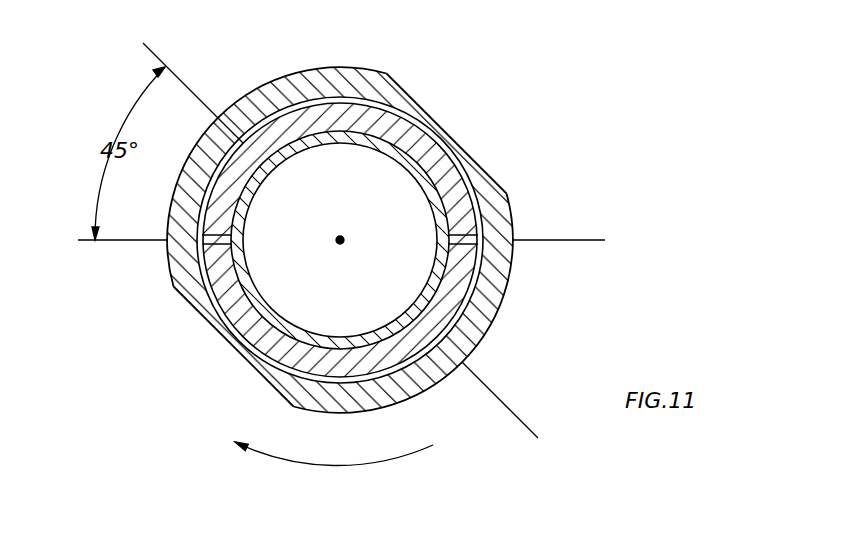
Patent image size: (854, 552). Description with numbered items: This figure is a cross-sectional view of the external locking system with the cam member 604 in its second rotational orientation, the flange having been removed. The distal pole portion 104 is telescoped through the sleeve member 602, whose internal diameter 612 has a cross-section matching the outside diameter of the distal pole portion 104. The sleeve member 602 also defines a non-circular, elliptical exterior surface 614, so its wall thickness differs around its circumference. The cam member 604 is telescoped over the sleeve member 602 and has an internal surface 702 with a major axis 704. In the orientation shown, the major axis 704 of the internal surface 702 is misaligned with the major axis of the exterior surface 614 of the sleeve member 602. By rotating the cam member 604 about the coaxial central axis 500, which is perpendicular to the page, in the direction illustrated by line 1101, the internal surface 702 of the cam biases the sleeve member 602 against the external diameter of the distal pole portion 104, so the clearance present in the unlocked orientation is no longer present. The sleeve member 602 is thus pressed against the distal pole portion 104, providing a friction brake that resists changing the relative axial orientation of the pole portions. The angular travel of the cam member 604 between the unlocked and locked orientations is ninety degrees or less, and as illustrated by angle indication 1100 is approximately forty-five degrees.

The distal pole portion 104 is at (420, 127).
The central axis 500 is at (339, 235).
The sleeve member 602 is at (480, 208).
The cam member 604 is at (470, 157).
The internal diameter 612 is at (485, 186).
The exterior surface 614 is at (330, 103).
The internal surface 702 is at (264, 116).
The major axis 704 is at (186, 86).
The rotation angle 1100 is at (122, 241).
The line 1101 is at (388, 459).